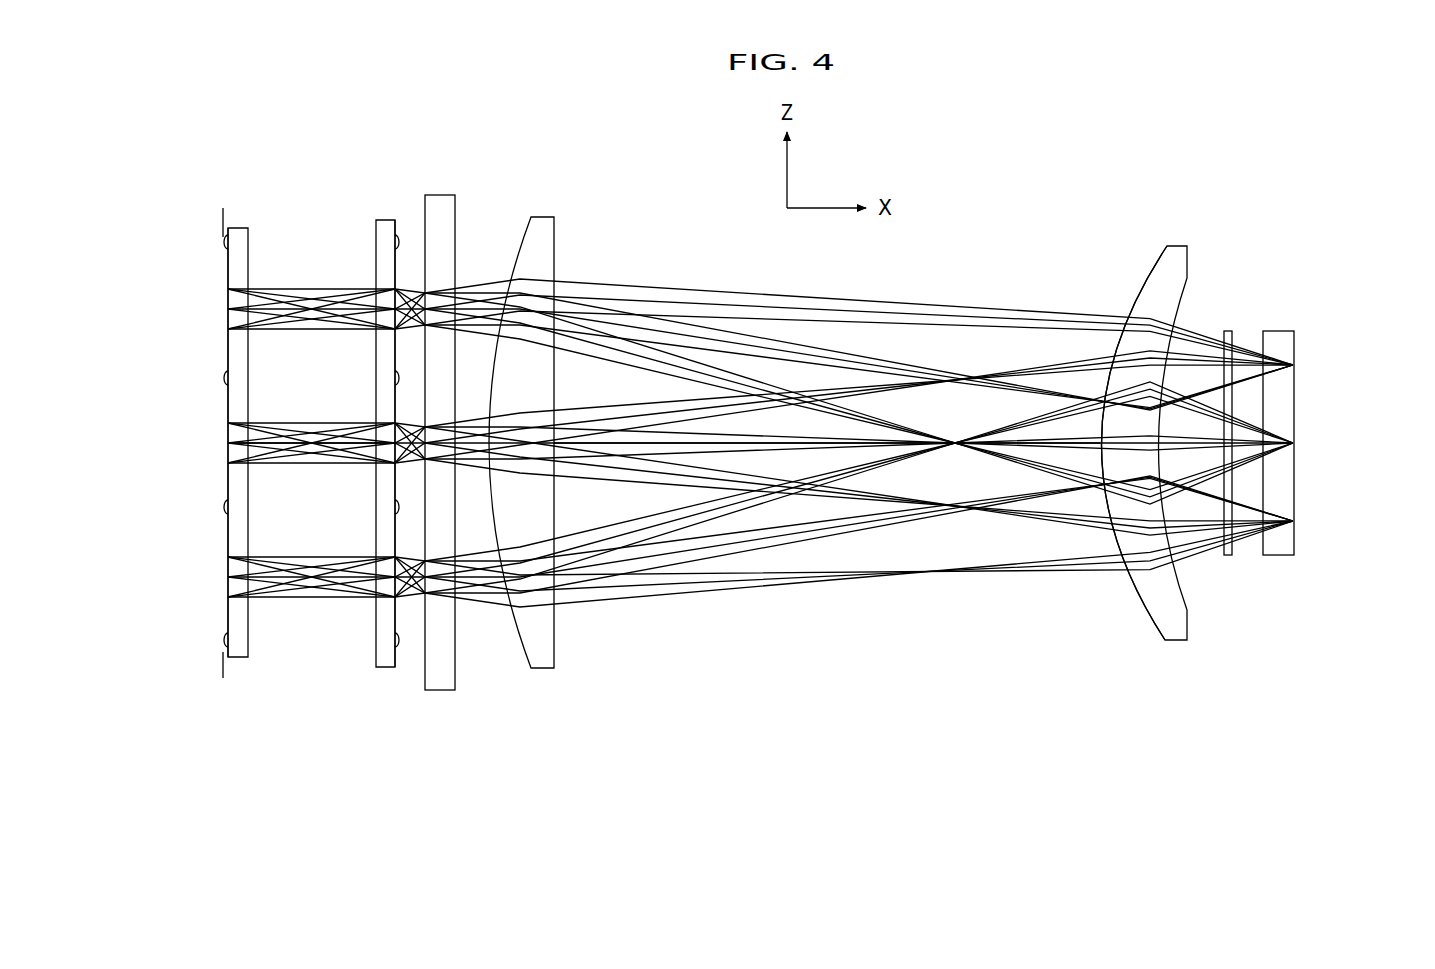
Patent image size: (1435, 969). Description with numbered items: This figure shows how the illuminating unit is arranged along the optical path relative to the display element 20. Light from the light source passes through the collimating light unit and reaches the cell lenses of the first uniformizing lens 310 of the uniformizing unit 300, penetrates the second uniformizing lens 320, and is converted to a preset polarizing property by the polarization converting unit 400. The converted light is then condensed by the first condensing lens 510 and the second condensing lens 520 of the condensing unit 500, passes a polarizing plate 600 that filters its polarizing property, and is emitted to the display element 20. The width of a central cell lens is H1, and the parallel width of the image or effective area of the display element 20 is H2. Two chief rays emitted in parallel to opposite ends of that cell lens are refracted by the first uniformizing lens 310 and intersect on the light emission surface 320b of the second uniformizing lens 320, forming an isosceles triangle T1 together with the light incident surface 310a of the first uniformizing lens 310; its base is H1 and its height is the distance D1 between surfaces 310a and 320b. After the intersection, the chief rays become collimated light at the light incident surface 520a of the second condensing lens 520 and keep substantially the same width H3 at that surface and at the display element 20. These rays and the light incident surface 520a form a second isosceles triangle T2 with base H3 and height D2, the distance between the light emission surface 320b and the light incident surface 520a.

The display element 20 is at (1280, 331).
The uniformizing unit 300 is at (311, 504).
The first uniformizing lens 310 is at (248, 657).
The light incident surface of the first uniformizing lens 310a is at (228, 228).
The second uniformizing lens 320 is at (383, 667).
The light emission surface of the second uniformizing lens 320b is at (395, 220).
The polarization converting unit 400 is at (441, 690).
The condensing unit 500 is at (841, 508).
The first condensing lens 510 is at (543, 668).
The second condensing lens 520 is at (1147, 503).
The light incident surface of the second condensing lens 520a is at (1167, 246).
The polarizing plate 600 is at (1228, 331).
The isosceles triangle T1 is at (280, 420).
The isosceles triangle T2 is at (1005, 373).
The width of the cell lens H1 is at (228, 463).
The width of the effective area of the display element H2 is at (1240, 378).
The width of the two chief rays H3 is at (1298, 362).
The distance between the light incident surface of the first uniformizing lens and t D1 is at (229, 657).
The distance between the light emission surface of the second uniformizing lens and D2 is at (1105, 530).